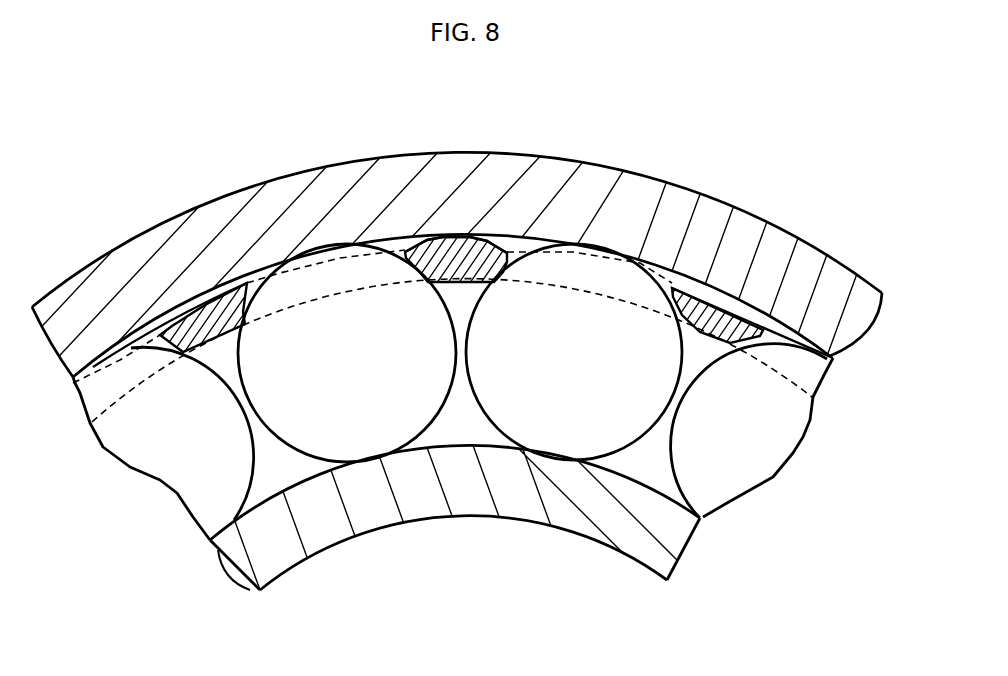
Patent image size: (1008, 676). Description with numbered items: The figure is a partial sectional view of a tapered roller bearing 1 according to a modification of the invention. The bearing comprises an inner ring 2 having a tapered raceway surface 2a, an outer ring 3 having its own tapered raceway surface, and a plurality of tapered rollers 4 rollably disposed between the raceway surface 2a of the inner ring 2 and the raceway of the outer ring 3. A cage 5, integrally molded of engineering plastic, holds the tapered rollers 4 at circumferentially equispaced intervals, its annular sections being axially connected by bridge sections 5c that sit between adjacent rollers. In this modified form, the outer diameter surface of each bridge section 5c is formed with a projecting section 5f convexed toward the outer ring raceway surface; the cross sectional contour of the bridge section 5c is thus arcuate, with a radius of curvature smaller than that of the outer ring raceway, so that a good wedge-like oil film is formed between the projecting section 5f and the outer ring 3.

The tapered roller bearing 1 is at (703, 152).
The inner ring 2 is at (477, 524).
The raceway surface 2a is at (665, 498).
The outer ring 3 is at (852, 332).
The tapered rollers 4 is at (557, 272).
The cage 5 is at (457, 323).
The bridge section 5c is at (473, 247).
The projecting section 5f is at (446, 230).